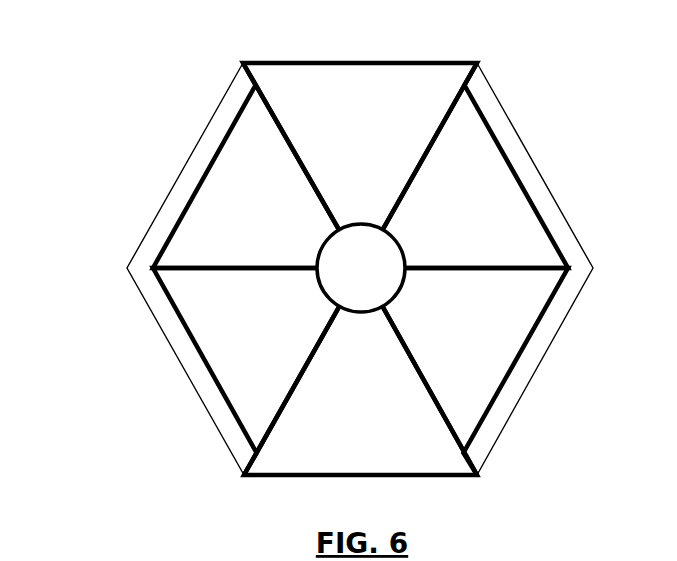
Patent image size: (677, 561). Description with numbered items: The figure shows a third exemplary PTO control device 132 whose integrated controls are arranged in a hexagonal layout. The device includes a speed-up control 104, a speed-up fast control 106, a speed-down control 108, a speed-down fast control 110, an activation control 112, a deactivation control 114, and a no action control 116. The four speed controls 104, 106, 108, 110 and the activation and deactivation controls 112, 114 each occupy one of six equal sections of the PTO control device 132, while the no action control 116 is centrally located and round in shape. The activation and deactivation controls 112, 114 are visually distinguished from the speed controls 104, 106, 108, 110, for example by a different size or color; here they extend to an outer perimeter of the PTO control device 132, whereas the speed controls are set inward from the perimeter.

The speed-up control 104 is at (527, 345).
The speed-up fast control 106 is at (527, 187).
The speed-down control 108 is at (198, 187).
The speed-down fast control 110 is at (198, 352).
The activation control 112 is at (437, 130).
The deactivation control 114 is at (437, 407).
The no action control 116 is at (320, 263).
The PTO control device 132 is at (492, 83).